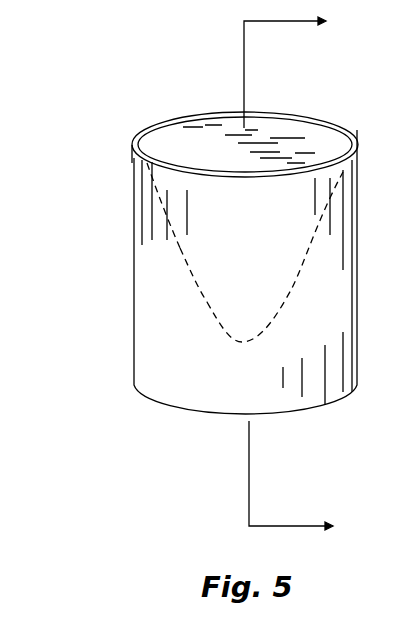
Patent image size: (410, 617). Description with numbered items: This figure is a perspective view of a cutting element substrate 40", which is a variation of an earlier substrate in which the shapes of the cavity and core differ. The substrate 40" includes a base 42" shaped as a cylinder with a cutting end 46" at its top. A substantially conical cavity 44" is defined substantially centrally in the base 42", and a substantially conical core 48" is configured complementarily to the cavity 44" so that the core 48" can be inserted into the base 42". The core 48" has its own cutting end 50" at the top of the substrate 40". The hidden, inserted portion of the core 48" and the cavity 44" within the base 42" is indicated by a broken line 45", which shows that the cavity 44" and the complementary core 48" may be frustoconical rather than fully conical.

The substrate 40 is at (87, 106).
The base 42 is at (160, 318).
The cavity 44 is at (205, 262).
The broken line 45 is at (226, 335).
The cutting end of base 46 is at (328, 115).
The core 48 is at (205, 228).
The cutting end of core 50 is at (290, 142).